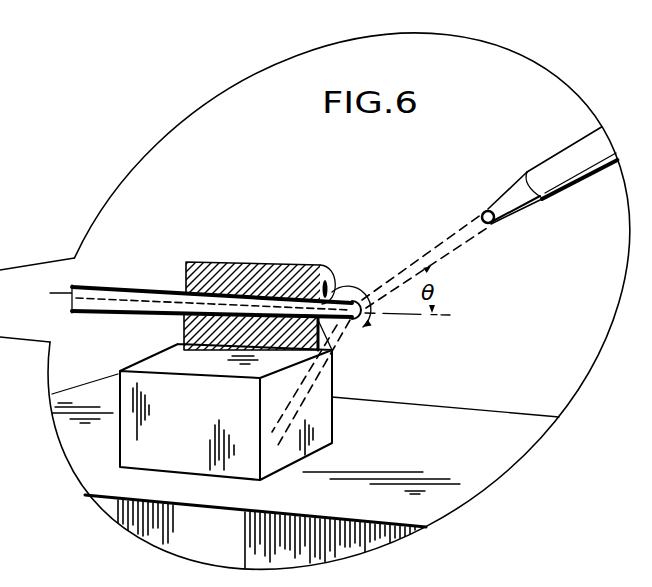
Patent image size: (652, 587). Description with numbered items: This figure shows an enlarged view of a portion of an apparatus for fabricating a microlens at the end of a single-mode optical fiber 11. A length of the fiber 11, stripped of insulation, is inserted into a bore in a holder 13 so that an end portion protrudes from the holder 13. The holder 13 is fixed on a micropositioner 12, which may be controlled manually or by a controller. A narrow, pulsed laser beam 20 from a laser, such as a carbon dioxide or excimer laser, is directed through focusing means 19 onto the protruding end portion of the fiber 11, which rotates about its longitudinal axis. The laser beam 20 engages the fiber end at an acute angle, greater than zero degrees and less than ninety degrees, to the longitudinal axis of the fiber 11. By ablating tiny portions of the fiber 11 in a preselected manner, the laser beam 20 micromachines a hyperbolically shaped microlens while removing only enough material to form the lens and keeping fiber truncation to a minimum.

The single-mode optical fiber 11 is at (120, 288).
The micropositioner 12 is at (326, 404).
The holder 13 is at (247, 263).
The focusing means 19 is at (553, 193).
The laser beam 20 is at (459, 223).